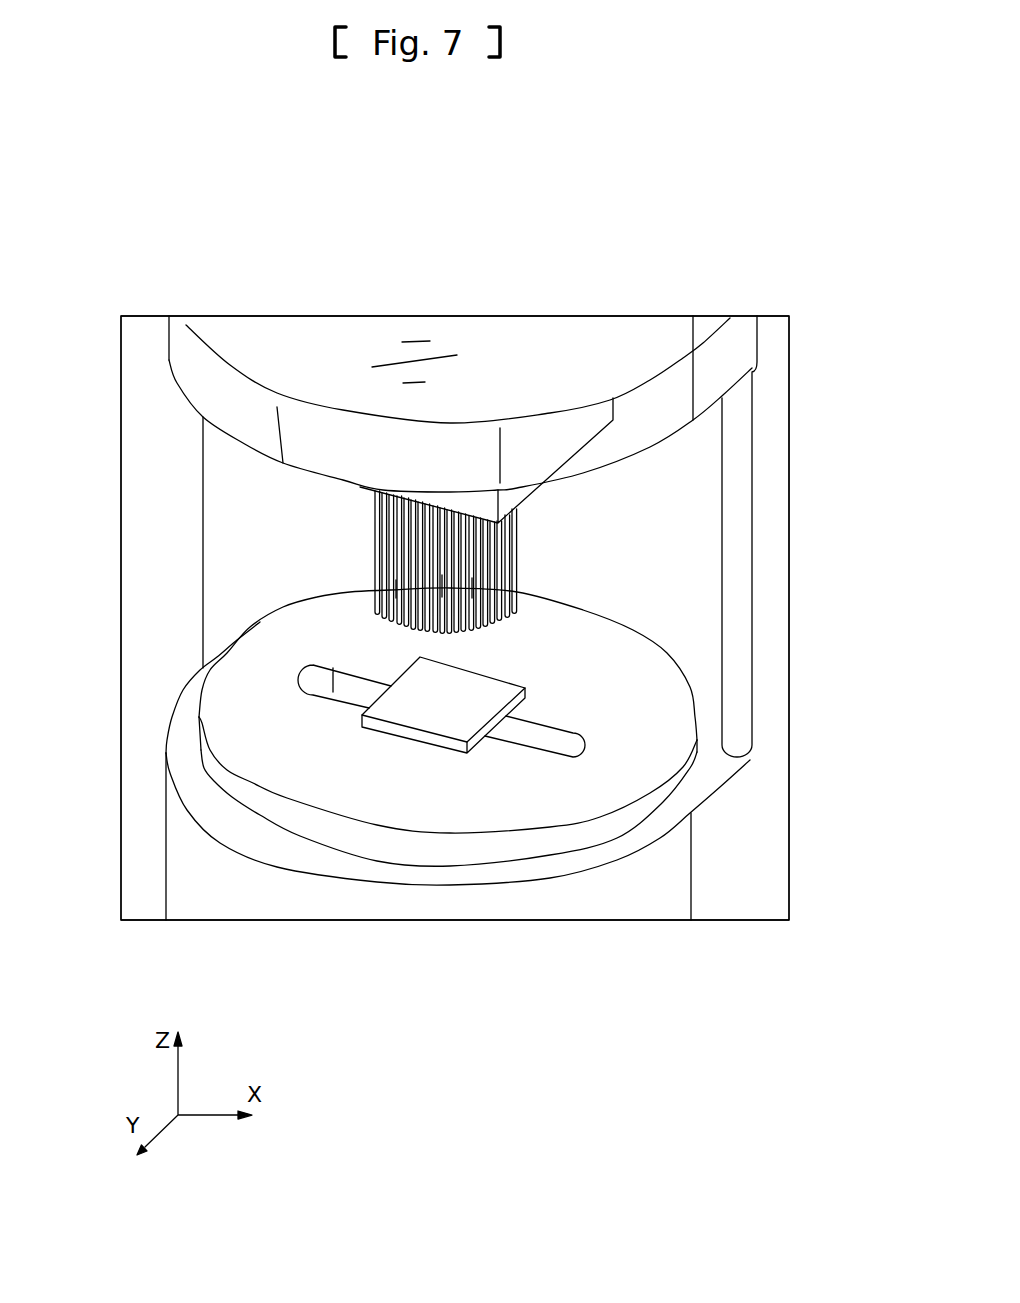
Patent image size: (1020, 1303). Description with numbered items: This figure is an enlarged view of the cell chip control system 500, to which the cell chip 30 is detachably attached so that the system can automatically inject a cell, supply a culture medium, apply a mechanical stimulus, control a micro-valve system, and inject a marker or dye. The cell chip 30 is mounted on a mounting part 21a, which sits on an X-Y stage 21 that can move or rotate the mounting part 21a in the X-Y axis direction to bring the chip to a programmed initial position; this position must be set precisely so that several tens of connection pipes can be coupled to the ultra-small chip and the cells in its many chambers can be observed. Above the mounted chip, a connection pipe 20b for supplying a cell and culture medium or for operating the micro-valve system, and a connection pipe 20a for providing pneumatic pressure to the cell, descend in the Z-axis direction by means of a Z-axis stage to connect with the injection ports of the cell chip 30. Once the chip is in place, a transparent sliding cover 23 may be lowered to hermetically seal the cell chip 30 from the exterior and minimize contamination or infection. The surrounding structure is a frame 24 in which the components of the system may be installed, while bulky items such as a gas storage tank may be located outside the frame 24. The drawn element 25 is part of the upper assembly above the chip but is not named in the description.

The cell chip control system 500 is at (698, 273).
The transparent sliding cover 23 is at (720, 369).
The frame 24 is at (153, 487).
The upper pressing plate 25 is at (513, 497).
The connection pipe 20a is at (445, 558).
The connection pipe 20b is at (517, 563).
The X-Y stage 21 is at (417, 798).
The mounting part 21a is at (557, 742).
The cell chip 30 is at (455, 708).